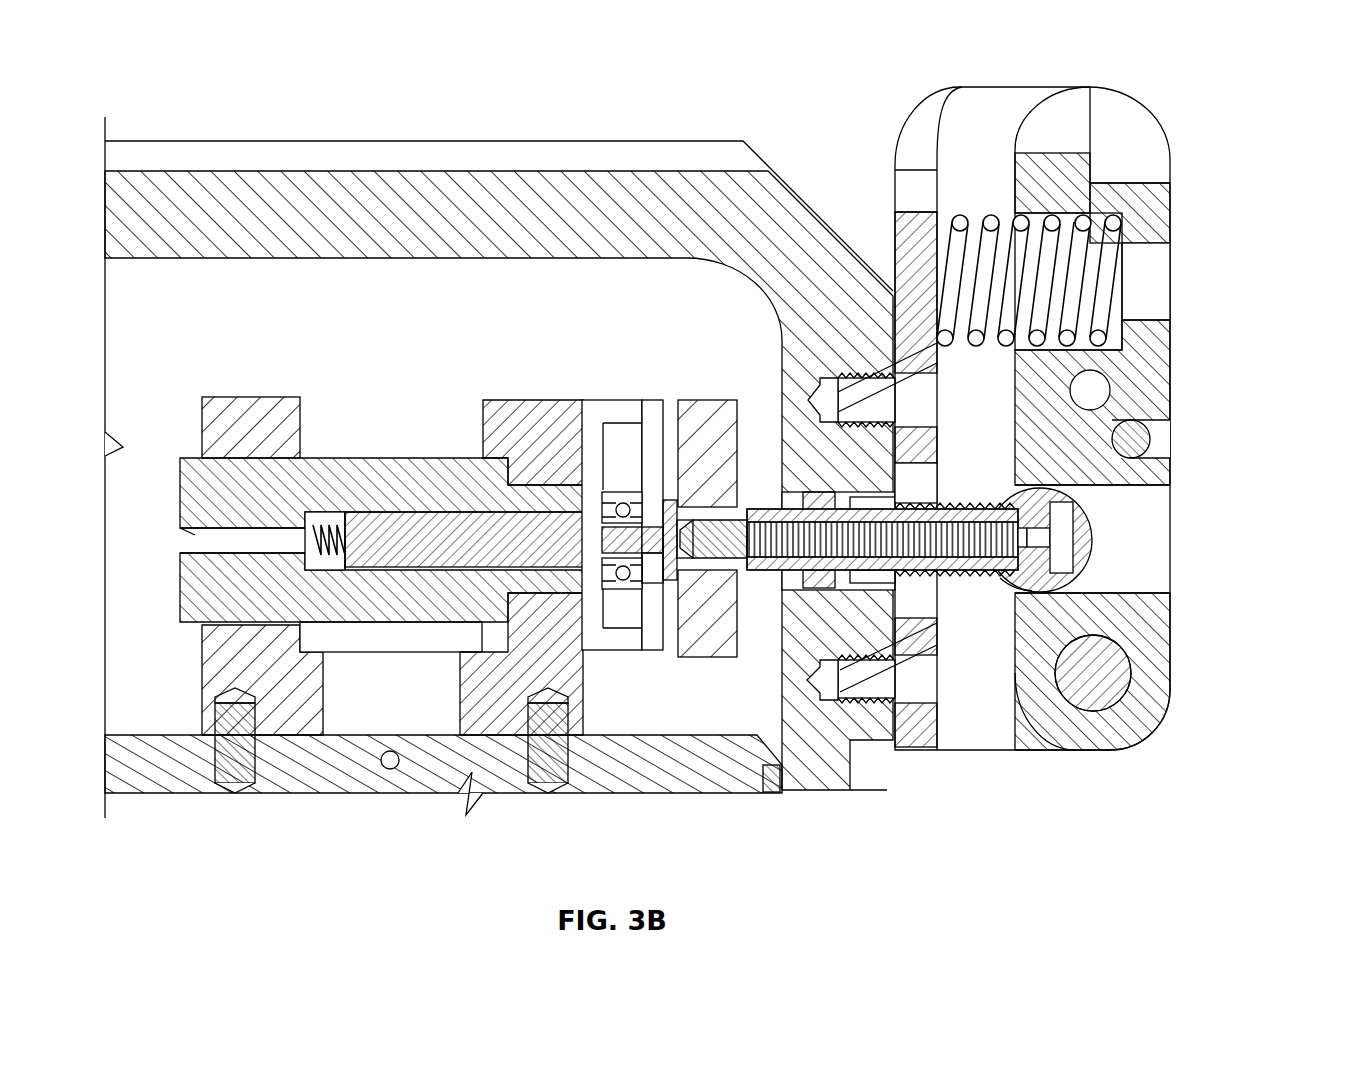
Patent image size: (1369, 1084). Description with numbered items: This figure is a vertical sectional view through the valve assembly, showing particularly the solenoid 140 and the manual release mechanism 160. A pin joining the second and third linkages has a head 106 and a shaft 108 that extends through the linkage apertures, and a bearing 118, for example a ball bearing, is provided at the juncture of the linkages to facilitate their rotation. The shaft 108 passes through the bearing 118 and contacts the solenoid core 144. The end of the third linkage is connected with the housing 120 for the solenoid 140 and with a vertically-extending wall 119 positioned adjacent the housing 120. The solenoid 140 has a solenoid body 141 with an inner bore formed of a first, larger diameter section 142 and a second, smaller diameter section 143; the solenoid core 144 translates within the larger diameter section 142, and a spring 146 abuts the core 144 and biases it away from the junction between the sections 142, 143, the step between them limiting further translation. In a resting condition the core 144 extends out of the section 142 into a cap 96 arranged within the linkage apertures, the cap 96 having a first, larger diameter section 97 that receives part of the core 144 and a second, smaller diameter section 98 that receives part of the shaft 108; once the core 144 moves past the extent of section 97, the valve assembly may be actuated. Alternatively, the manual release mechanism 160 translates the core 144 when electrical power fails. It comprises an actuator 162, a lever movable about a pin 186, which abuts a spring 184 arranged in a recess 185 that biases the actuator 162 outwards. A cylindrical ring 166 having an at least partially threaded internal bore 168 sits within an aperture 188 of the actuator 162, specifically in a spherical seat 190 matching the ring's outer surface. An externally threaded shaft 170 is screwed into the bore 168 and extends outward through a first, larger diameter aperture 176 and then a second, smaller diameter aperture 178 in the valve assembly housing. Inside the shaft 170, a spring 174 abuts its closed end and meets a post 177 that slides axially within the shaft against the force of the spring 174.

The cap 96 is at (595, 490).
The first, larger diameter section 97 is at (612, 600).
The second, smaller diameter section 98 is at (662, 583).
The head 106 is at (682, 518).
The shaft 108 is at (665, 505).
The bearing 118 is at (612, 490).
The vertically-extending wall 119 is at (718, 430).
The housing 120 is at (510, 440).
The solenoid 140 is at (355, 466).
The solenoid body 141 is at (190, 578).
The first, larger diameter section 142 is at (313, 525).
The second, smaller diameter section 143 is at (185, 540).
The solenoid core 144 is at (418, 530).
The spring 146 is at (347, 550).
The manual release mechanism 160 is at (1235, 422).
The actuator 162 is at (1148, 340).
The cylindrical ring 166 is at (1010, 495).
The internal bore 168 is at (1062, 548).
The shaft 170 is at (968, 576).
The spring 174 is at (962, 515).
The first, larger diameter aperture 176 is at (905, 590).
The post 177 is at (708, 548).
The second, smaller diameter aperture 178 is at (772, 508).
The spring 184 is at (958, 222).
The recess 185 is at (1098, 225).
The pin 186 is at (1115, 668).
The aperture 188 is at (1140, 487).
The spherical seat 190 is at (1008, 590).